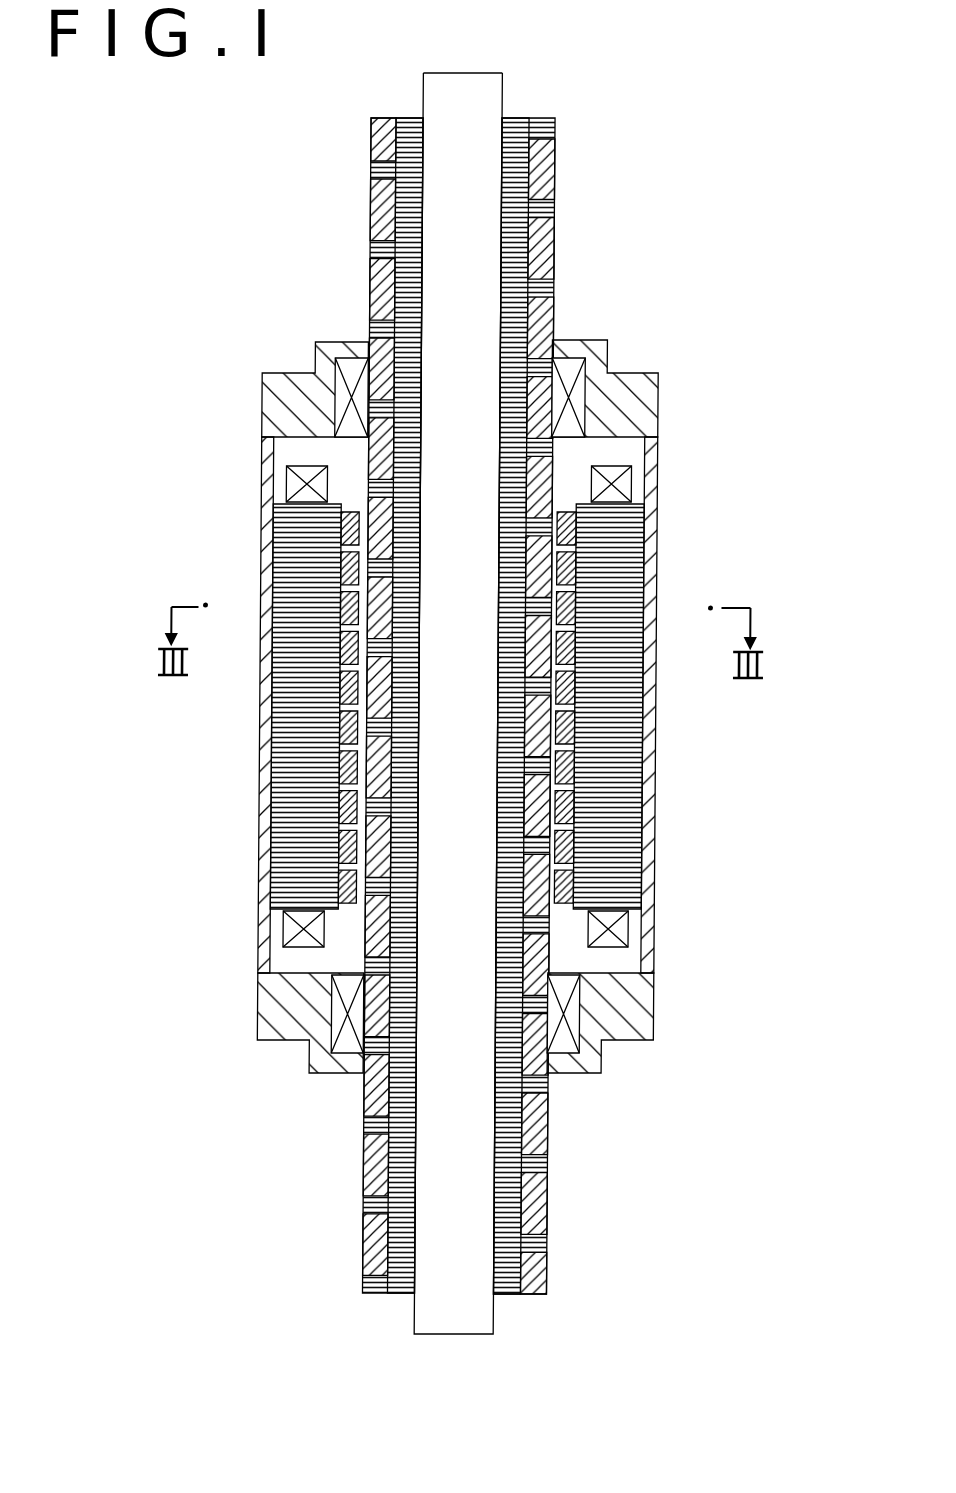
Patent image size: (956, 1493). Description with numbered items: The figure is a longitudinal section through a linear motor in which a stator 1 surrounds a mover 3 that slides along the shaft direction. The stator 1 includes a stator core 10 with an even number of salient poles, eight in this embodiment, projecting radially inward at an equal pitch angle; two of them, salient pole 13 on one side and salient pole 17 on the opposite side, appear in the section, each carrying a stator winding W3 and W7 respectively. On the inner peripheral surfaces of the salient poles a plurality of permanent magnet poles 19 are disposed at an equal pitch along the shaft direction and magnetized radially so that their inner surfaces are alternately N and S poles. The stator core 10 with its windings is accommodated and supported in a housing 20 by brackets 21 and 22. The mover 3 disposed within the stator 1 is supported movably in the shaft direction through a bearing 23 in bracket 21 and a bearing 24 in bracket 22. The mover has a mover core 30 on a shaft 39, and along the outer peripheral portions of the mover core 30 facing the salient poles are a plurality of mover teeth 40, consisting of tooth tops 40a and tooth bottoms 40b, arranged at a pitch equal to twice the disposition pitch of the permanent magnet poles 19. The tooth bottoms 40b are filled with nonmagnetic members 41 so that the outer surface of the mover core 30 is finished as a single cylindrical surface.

The stator 1 is at (646, 734).
The mover 3 is at (478, 98).
The stator core 10 is at (624, 822).
The salient pole 13 is at (607, 550).
The salient pole 17 is at (302, 540).
The permanent magnet pole 19 is at (350, 905).
The housing 20 is at (654, 891).
The bracket 21 is at (630, 410).
The bracket 22 is at (636, 1007).
The bearing 23 is at (562, 358).
The bearing 24 is at (563, 1040).
The mover core 30 is at (408, 119).
The shaft 39 is at (448, 95).
The mover teeth 40 is at (556, 292).
The tooth top 40a is at (540, 213).
The tooth bottom 40b is at (540, 172).
The nonmagnetic member 41 is at (372, 295).
The stator winding W3 is at (612, 473).
The stator winding W7 is at (307, 470).